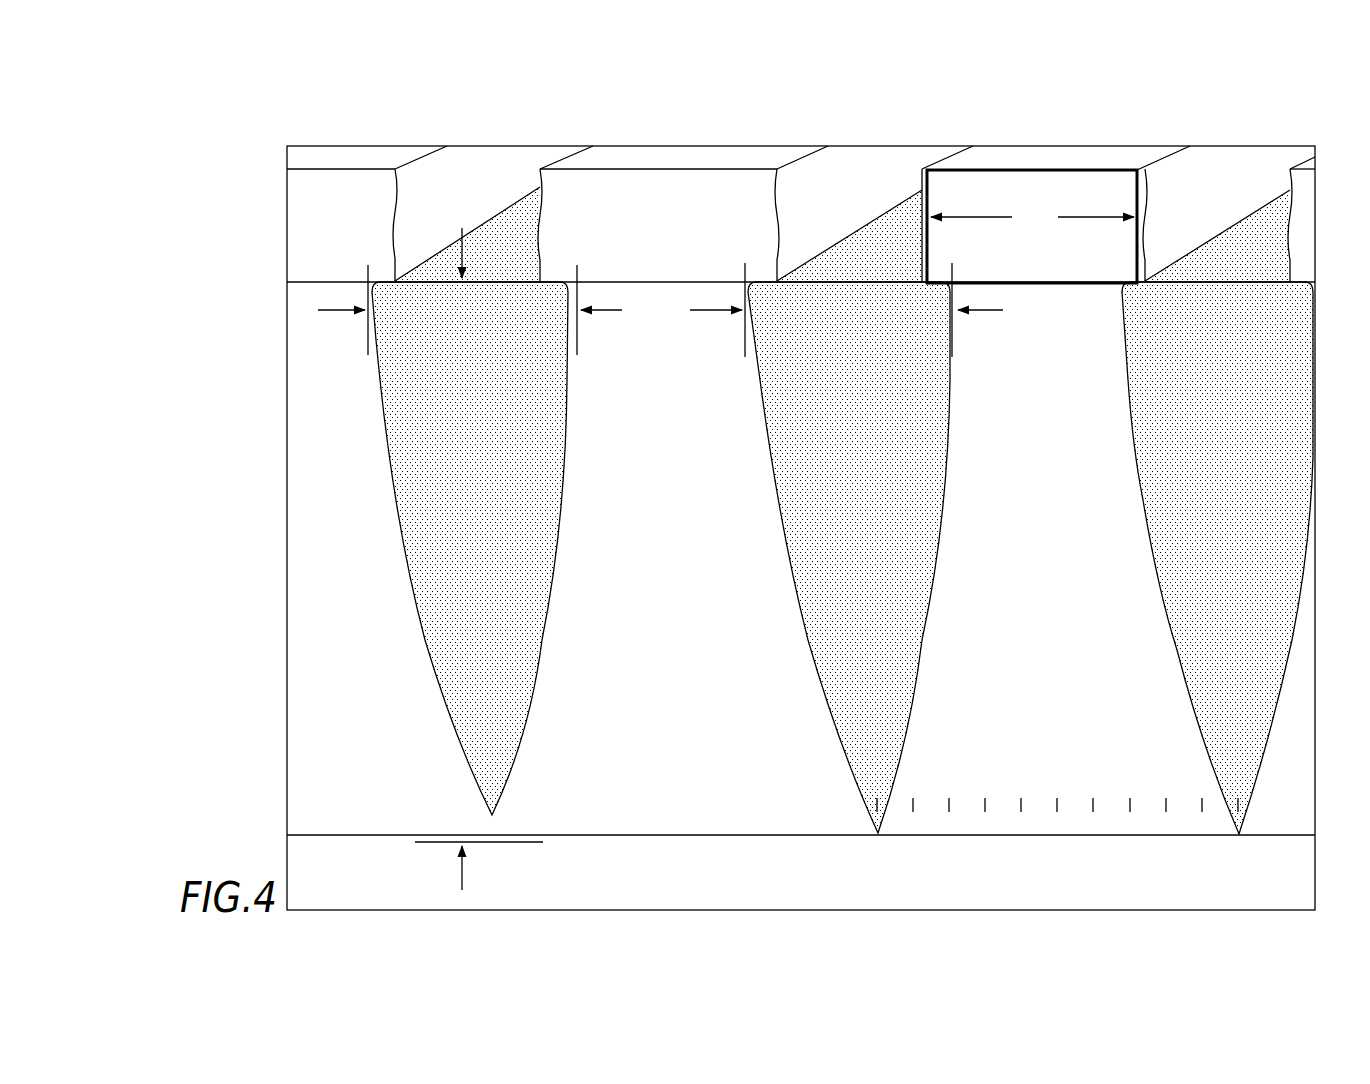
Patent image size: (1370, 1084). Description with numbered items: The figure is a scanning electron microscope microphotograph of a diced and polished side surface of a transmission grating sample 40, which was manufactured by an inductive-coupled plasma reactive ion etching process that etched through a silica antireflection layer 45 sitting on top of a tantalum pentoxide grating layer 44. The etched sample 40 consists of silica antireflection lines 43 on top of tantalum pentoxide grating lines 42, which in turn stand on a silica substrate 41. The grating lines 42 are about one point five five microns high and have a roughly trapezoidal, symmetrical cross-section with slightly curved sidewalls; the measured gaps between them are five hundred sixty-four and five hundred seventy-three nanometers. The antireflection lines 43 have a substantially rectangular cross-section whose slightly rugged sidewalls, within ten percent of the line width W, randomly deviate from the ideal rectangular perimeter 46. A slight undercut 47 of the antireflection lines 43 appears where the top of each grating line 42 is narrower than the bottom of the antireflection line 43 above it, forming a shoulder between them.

The transmission grating sample 40 is at (797, 131).
The SiO2 substrate 41 is at (1075, 893).
The Ta2O5 grating lines 42 is at (352, 634).
The SiO2 antireflection lines 43 is at (337, 263).
The Ta2O5 grating layer 44 is at (267, 291).
The SiO2 antireflection layer 45 is at (258, 170).
The ideal rectangular perimeter 46 is at (1146, 238).
The undercut 47 is at (540, 310).